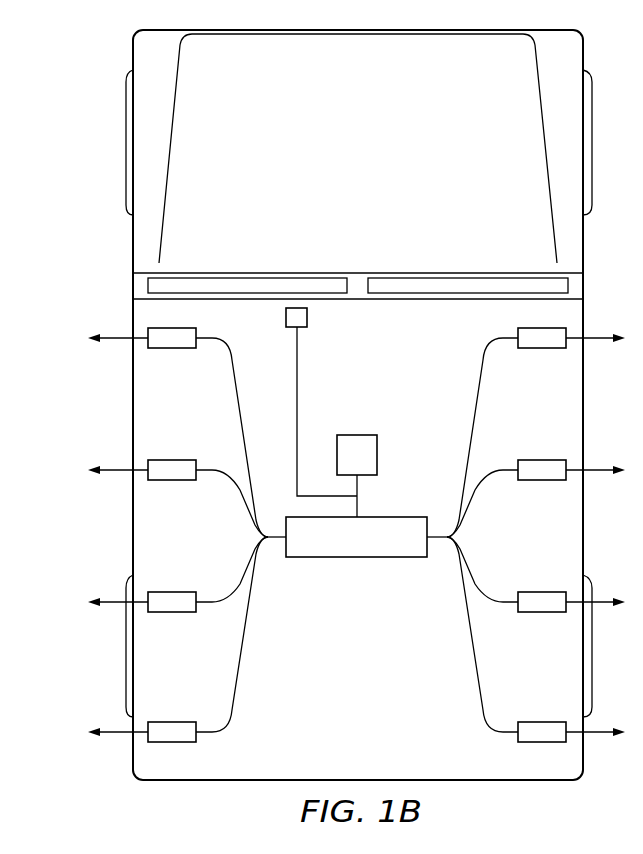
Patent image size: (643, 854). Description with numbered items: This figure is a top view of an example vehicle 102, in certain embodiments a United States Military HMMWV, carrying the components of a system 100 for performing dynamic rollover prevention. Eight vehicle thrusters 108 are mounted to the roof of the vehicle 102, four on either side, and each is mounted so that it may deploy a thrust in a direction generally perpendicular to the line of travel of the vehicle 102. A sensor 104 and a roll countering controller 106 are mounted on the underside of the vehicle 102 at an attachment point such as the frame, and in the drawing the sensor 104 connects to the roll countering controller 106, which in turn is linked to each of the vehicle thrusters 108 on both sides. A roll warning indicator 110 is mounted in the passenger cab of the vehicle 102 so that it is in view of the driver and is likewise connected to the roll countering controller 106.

The system 100 is at (95, 104).
The vehicle 102 is at (133, 407).
The sensor 104 is at (378, 453).
The roll countering controller 106 is at (377, 557).
The vehicle thrusters 108 is at (170, 348).
The roll warning indicator 110 is at (307, 315).